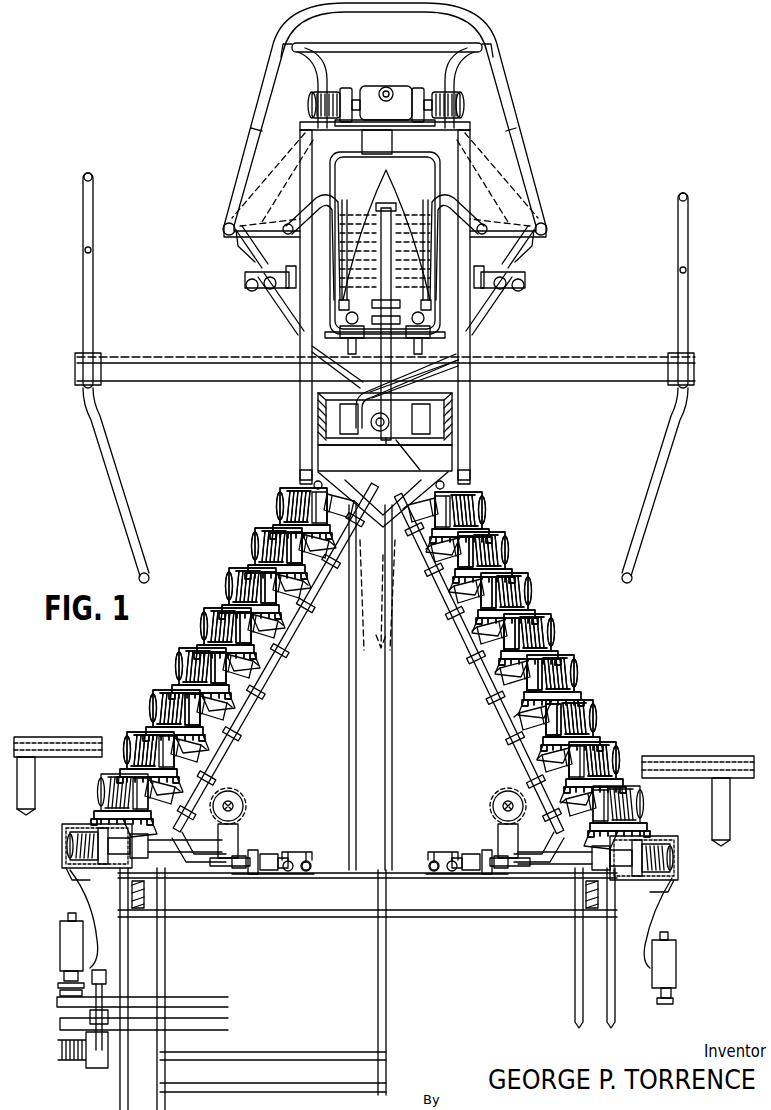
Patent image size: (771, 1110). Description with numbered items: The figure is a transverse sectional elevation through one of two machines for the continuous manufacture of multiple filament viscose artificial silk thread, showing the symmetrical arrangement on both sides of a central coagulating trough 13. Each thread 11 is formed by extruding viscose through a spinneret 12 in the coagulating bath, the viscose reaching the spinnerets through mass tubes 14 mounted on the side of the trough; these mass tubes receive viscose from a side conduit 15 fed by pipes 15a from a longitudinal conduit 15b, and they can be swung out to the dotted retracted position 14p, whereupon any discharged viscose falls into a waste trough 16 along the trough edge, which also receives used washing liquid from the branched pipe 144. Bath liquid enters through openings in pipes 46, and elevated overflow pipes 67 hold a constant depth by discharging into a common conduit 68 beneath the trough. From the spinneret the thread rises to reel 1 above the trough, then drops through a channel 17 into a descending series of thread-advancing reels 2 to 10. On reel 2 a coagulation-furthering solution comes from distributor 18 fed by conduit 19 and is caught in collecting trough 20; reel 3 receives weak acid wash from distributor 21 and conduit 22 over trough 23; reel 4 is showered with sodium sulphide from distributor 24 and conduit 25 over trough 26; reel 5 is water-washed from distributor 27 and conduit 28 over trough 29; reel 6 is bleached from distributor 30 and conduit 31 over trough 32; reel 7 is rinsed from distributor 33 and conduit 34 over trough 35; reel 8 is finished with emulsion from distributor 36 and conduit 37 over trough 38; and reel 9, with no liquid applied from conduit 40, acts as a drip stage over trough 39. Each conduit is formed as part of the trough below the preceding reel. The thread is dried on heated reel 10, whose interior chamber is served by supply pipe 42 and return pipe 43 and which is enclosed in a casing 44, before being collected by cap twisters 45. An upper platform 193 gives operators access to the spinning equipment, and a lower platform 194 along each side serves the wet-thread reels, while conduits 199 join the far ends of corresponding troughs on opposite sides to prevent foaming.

The thread-advancing reel 1 is at (333, 92).
The thread-advancing reel 2 is at (280, 488).
The thread-advancing reel 3 is at (255, 536).
The thread-advancing reel 4 is at (229, 578).
The thread-advancing reel 5 is at (204, 618).
The thread-advancing reel 6 is at (179, 660).
The thread-advancing reel 7 is at (176, 698).
The thread-advancing reel 8 is at (210, 765).
The thread-advancing reel 9 is at (104, 788).
The heated reel 10 is at (70, 848).
The thread 11 is at (300, 186).
The spinneret 12 is at (371, 290).
The trough 13 is at (338, 300).
The mass tube 14 is at (300, 210).
The retracted position of mass tube 14p is at (298, 150).
The conduit 15 is at (254, 290).
The pipe 15a is at (276, 325).
The conduit 15b is at (358, 440).
The waste trough 16 is at (244, 244).
The channel 17 is at (300, 416).
The distributor 18 is at (300, 476).
The conduit 19 is at (379, 484).
The collecting trough 20 is at (280, 500).
The distributor 21 is at (262, 528).
The conduit 22 is at (280, 525).
The trough 23 is at (258, 545).
The distributor 24 is at (236, 568).
The conduit 25 is at (262, 566).
The trough 26 is at (229, 584).
The distributor 27 is at (214, 608).
The conduit 28 is at (236, 605).
The collecting trough 29 is at (204, 629).
The distributor 30 is at (184, 650).
The conduit 31 is at (204, 646).
The collecting trough 32 is at (566, 678).
The distributor 33 is at (156, 690).
The conduit 34 is at (186, 686).
The collecting trough 35 is at (153, 708).
The distributor 36 is at (134, 734).
The conduit 37 is at (158, 726).
The trough 38 is at (135, 750).
The trough 39 is at (104, 814).
The conduit 40 is at (122, 772).
The supply pipe 42 is at (286, 874).
The return pipe 43 is at (306, 874).
The casing 44 is at (62, 826).
The cap twister 45 is at (66, 958).
The pipe 46 is at (385, 333).
The overflow pipe 67 is at (392, 300).
The conduit 68 is at (386, 414).
The branched pipe 144 is at (392, 438).
The upper platform 193 is at (165, 358).
The lower platform 194 is at (50, 737).
The conduit 199 is at (377, 595).